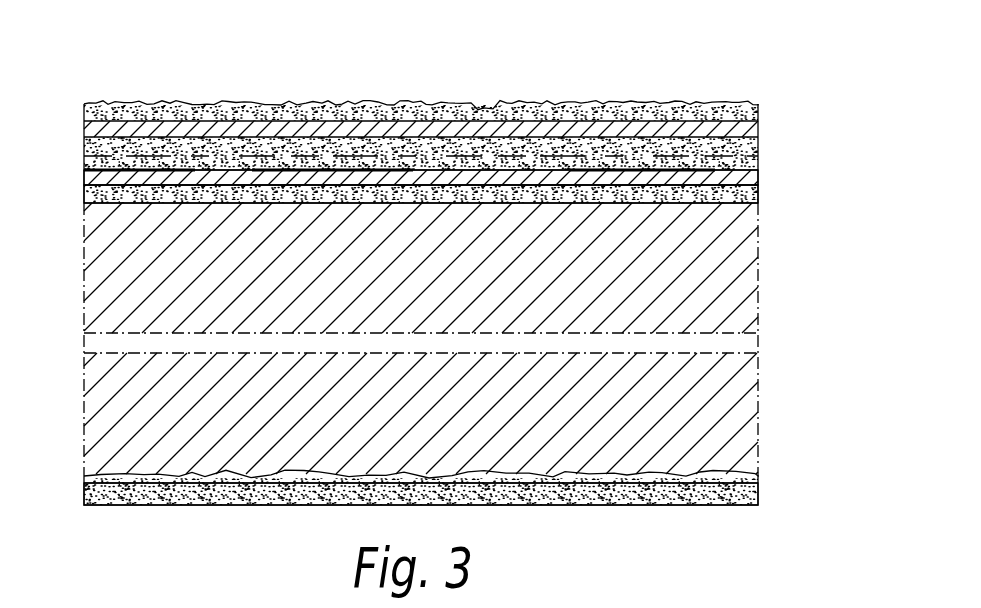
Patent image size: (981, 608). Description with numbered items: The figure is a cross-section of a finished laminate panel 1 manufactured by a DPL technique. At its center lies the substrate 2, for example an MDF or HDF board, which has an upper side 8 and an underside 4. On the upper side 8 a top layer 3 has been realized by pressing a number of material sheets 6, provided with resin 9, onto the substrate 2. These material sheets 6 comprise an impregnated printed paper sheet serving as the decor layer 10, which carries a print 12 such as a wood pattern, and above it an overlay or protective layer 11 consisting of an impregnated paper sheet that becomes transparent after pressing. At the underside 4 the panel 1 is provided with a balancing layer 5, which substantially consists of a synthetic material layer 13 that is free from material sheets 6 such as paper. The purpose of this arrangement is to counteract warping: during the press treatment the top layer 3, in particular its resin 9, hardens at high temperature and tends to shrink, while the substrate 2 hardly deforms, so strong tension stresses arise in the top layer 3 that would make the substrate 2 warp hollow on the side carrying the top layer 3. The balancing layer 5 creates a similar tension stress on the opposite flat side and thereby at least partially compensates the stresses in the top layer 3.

The laminate panel 1 is at (641, 61).
The substrate 2 is at (740, 280).
The top layer 3 is at (80, 105).
The underside 4 is at (225, 483).
The balancing layer 5 is at (762, 482).
The material sheets 6 is at (383, 173).
The upper side 8 is at (268, 203).
The resin 9 is at (577, 193).
The decor layer 10 is at (762, 150).
The protective layer 11 is at (762, 150).
The print 12 is at (143, 170).
The synthetic material layer 13 is at (80, 472).